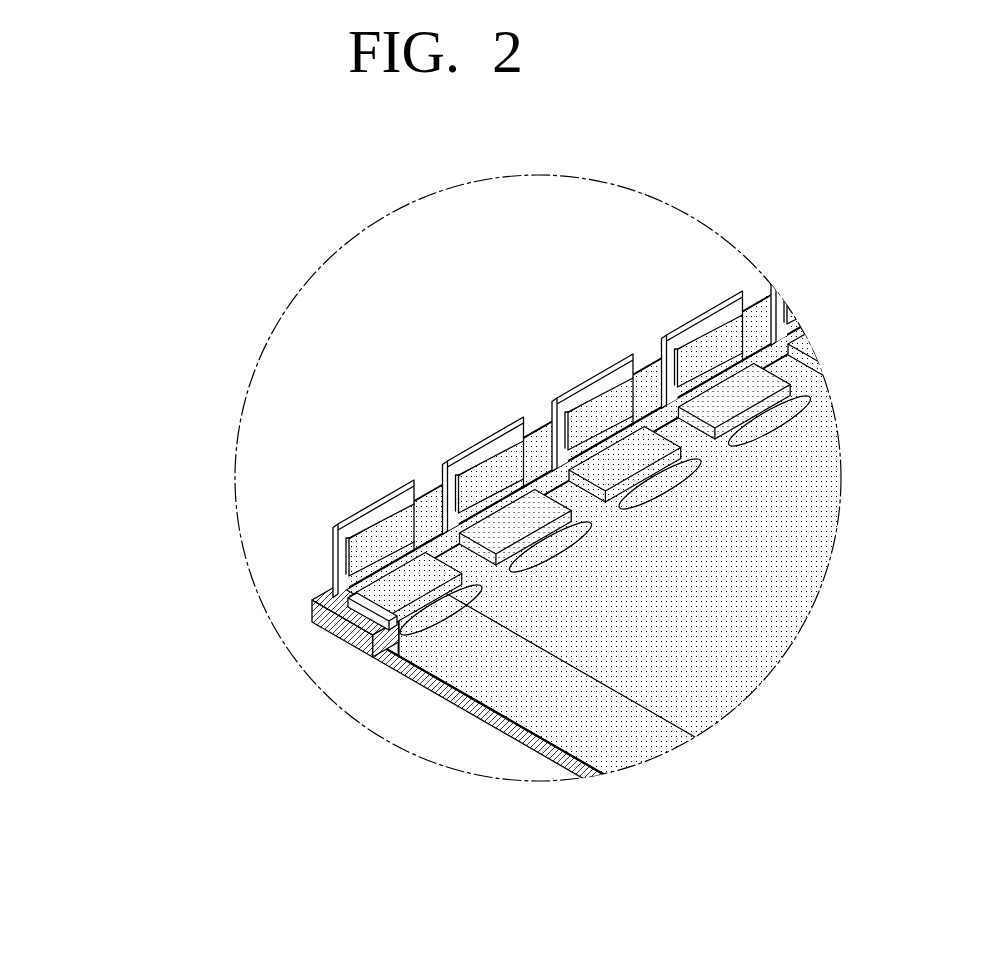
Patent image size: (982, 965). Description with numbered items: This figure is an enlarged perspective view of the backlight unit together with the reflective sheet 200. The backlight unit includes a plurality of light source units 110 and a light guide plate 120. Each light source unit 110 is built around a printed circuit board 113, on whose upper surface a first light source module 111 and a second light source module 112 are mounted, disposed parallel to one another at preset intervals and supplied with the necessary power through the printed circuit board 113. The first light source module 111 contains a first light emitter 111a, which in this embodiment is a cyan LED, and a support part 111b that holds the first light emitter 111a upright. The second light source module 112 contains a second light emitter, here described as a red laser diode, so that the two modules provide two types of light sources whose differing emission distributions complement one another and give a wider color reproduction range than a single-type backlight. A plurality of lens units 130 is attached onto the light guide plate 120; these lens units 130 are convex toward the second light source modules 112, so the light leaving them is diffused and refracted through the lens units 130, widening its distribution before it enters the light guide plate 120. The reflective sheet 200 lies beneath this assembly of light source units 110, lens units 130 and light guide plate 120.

The light source unit 110 is at (266, 575).
The first light source module 111 is at (263, 539).
The first light emitter 111a is at (340, 562).
The support part 111b is at (333, 525).
The second light source module 112 is at (345, 598).
The printed circuit board 113 is at (345, 632).
The light guide plate 120 is at (737, 667).
The lens unit 130 is at (389, 654).
The reflective sheet 200 is at (540, 750).